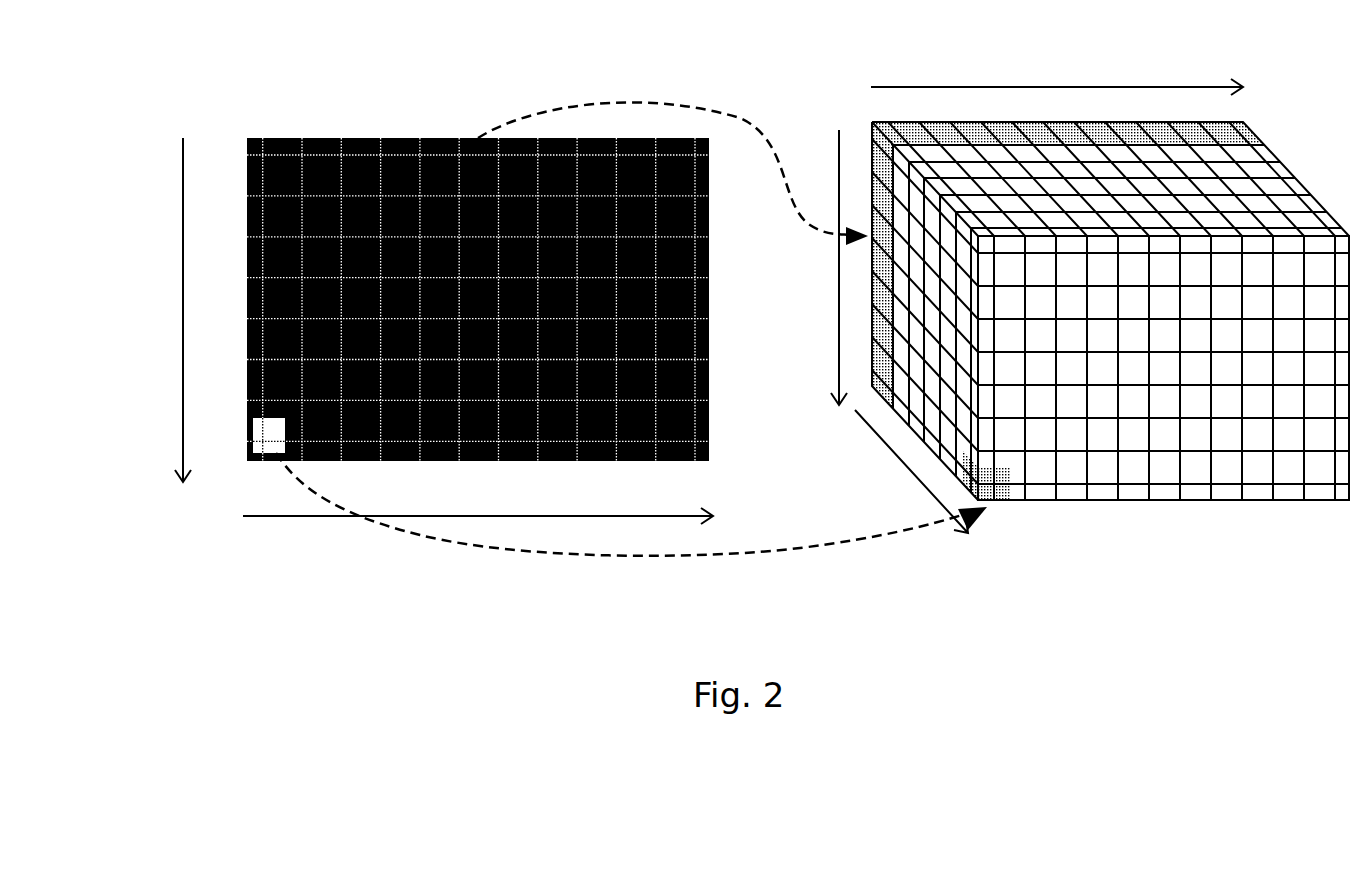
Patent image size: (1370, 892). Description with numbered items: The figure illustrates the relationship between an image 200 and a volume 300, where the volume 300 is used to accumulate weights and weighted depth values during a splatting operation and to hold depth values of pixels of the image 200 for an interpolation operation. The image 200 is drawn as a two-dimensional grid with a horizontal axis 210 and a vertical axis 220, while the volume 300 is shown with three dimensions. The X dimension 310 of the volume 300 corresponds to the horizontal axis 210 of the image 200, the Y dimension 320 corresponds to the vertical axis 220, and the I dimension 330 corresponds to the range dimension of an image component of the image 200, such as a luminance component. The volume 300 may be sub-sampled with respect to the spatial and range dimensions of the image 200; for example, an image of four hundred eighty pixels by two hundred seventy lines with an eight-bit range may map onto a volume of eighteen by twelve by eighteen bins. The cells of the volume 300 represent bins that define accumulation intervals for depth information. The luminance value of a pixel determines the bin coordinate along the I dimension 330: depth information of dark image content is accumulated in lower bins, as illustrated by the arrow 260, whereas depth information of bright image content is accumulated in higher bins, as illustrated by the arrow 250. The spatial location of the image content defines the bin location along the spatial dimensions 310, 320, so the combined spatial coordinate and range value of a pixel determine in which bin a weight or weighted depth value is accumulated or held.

The image 200 is at (398, 138).
The horizontal axis 210 is at (478, 516).
The vertical axis 220 is at (182, 300).
The arrow 250 is at (800, 550).
The arrow 260 is at (765, 133).
The volume 300 is at (1195, 503).
The X dimension 310 is at (1148, 87).
The Y dimension 320 is at (838, 150).
The I dimension 330 is at (903, 460).